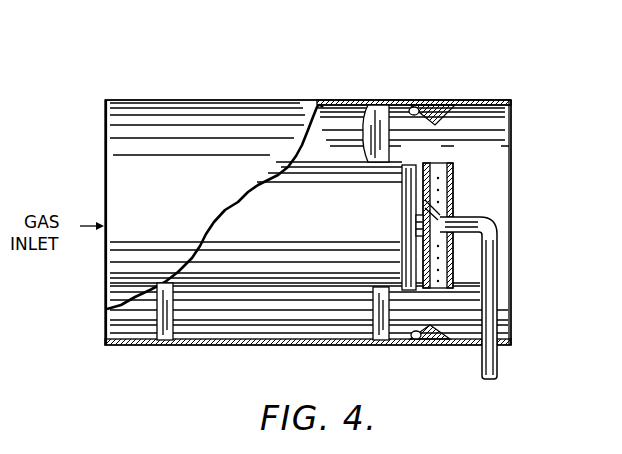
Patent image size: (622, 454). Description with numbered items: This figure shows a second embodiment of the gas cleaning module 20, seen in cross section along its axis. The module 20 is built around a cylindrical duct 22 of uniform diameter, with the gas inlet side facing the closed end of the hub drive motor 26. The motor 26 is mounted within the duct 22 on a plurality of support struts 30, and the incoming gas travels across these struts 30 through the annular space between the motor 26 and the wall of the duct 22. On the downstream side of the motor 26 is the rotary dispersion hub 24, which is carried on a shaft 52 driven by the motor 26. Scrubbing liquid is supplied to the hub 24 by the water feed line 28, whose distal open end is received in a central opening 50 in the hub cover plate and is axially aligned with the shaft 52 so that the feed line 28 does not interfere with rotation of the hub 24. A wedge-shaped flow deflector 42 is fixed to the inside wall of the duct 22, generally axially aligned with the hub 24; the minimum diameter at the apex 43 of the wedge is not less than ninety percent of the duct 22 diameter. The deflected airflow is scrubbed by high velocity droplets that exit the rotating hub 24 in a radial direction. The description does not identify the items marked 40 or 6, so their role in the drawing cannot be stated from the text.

The gas cleaning module 20 is at (147, 36).
The cylindrical duct 22 is at (211, 99).
The rotary dispersion hub 24 is at (450, 163).
The hub drive motor 26 is at (368, 108).
The water feed line 28 is at (498, 365).
The support struts 30 is at (382, 133).
The bottom wall 40 is at (264, 346).
The wedge-shaped flow deflector 42 is at (408, 110).
The apex of the wedge 43 is at (435, 125).
The central opening 50 is at (0, 61).
The shaft 52 is at (419, 236).
The partial numeral 6 is at (6, 321).